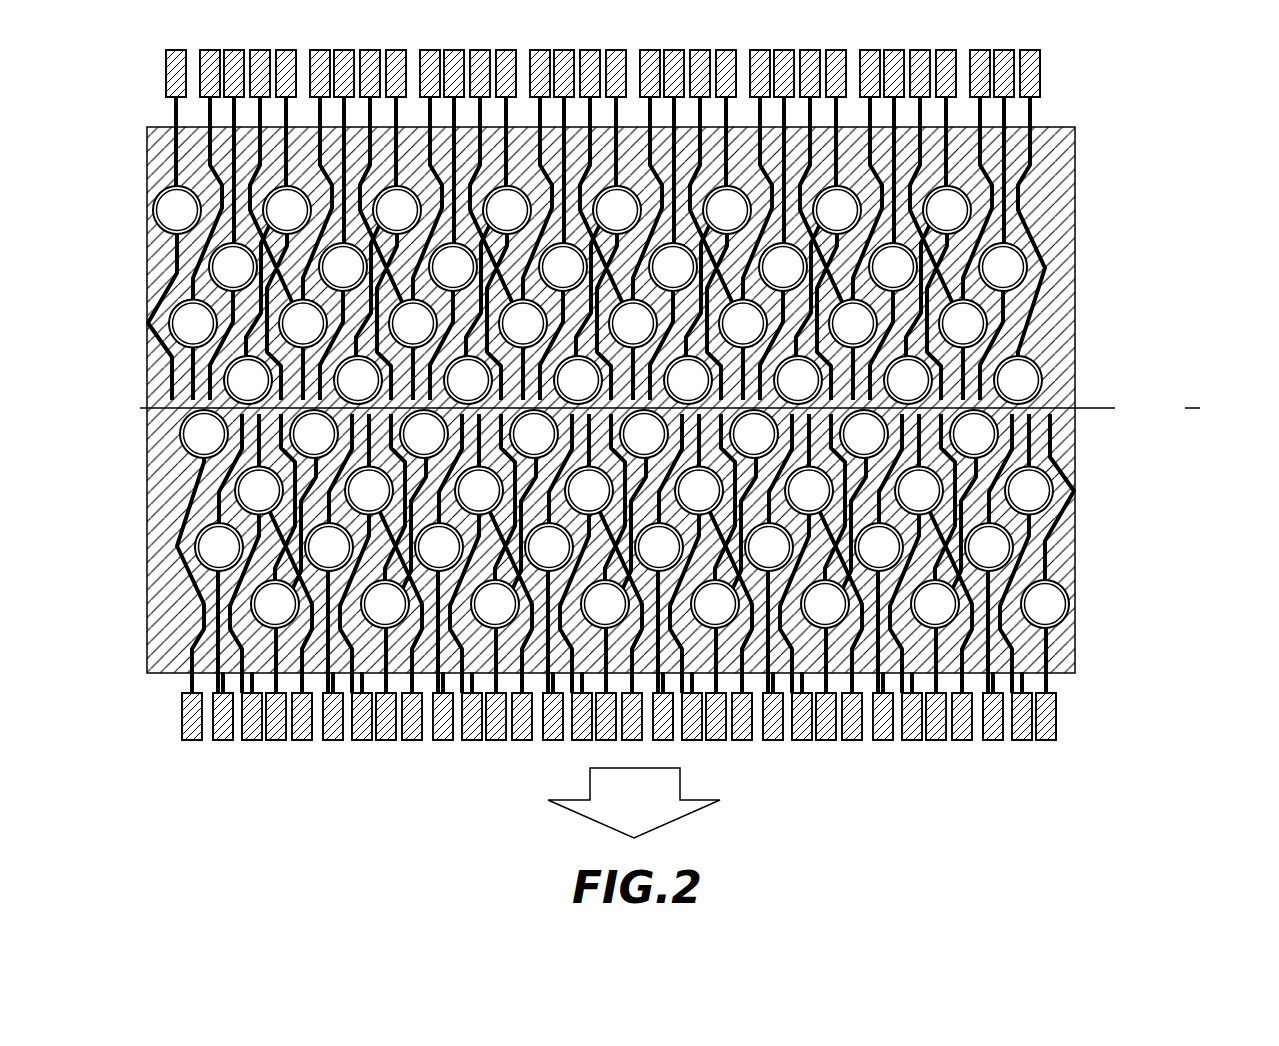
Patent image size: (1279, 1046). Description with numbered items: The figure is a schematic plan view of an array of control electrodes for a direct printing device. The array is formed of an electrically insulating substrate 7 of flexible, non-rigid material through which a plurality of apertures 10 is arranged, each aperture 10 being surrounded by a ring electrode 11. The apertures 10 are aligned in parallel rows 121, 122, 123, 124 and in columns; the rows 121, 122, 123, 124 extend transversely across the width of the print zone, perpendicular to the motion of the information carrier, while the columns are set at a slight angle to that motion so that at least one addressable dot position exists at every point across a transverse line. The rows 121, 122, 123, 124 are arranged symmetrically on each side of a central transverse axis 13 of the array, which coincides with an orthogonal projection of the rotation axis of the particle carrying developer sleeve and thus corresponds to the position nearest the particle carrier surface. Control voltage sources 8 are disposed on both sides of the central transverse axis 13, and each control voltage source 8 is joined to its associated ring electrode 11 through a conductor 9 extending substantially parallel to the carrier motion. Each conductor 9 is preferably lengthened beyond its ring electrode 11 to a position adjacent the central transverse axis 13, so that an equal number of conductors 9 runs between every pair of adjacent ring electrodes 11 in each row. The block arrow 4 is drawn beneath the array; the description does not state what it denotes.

The insertion direction arrow 4 is at (634, 803).
The electrically insulating substrate 7 is at (1062, 164).
The control voltage source 8 is at (1042, 70).
The conductor 9 is at (1040, 110).
The aperture 10 is at (1052, 607).
The ring electrode 11 is at (1062, 624).
The central transverse axis 13 is at (670, 407).
The row of apertures 121 is at (140, 380).
The row of apertures 122 is at (140, 324).
The row of apertures 123 is at (140, 267).
The row of apertures 124 is at (695, 429).